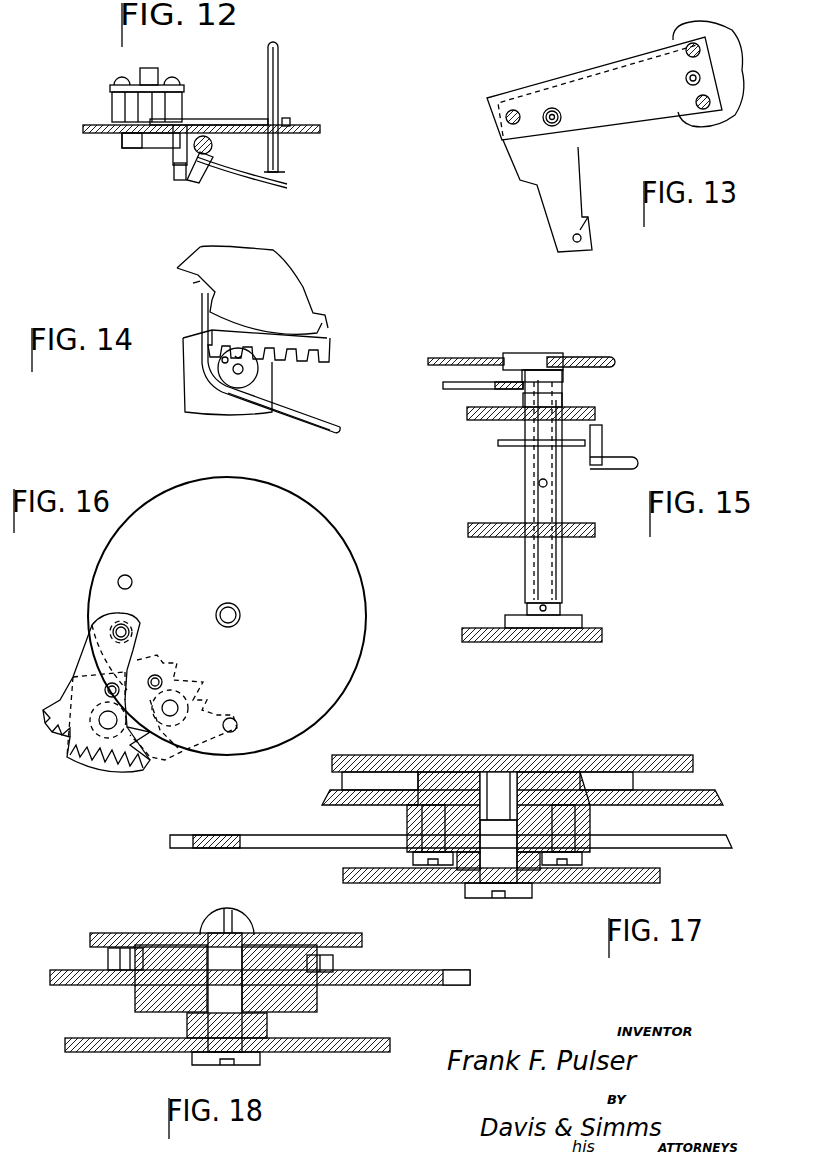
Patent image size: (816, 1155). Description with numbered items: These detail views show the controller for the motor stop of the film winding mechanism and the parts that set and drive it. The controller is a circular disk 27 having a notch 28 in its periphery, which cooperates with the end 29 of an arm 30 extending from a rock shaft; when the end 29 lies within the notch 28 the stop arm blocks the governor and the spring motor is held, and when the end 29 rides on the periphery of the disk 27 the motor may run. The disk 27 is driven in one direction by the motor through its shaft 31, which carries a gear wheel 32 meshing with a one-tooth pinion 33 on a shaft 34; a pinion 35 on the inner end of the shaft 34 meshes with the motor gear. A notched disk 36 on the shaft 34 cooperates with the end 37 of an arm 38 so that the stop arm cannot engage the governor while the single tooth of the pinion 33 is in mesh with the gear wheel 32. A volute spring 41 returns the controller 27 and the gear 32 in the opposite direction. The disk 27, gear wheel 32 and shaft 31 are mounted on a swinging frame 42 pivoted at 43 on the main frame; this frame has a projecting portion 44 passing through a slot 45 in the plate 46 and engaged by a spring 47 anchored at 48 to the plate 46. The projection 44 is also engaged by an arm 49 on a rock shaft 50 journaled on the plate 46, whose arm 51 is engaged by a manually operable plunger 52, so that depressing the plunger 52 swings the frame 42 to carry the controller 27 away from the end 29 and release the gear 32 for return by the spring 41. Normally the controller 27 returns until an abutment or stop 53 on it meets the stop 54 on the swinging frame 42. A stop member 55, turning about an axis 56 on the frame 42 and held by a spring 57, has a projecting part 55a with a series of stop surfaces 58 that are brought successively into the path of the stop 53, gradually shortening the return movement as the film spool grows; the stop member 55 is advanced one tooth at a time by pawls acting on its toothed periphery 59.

In FIG. 14, the circular disk 27 is at (300, 302).
In FIG. 15, the circular disk 27 is at (470, 358).
In FIG. 16, the circular disk 27 is at (350, 652).
In FIG. 17, the circular disk 27 is at (712, 796).
In FIG. 14, the notch 28 is at (193, 283).
In FIG. 16, the notch 28 is at (160, 667).
In FIG. 14, the end of arm 29 is at (202, 306).
In FIG. 15, the end of arm 29 is at (537, 354).
In FIG. 14, the arm 30 is at (294, 422).
In FIG. 15, the arm 30 is at (617, 362).
In FIG. 16, the shaft 31 is at (238, 612).
In FIG. 17, the shaft 31 is at (495, 772).
In FIG. 14, the gear wheel 32 is at (325, 338).
In FIG. 15, the gear wheel 32 is at (448, 388).
In FIG. 17, the gear wheel 32 is at (700, 845).
In FIG. 14, the one-tooth pinion 33 is at (258, 372).
In FIG. 15, the one-tooth pinion 33 is at (565, 400).
In FIG. 14, the shaft 34 is at (232, 370).
In FIG. 15, the shaft 34 is at (555, 522).
In FIG. 15, the pinion 35 is at (576, 617).
In FIG. 15, the notched disk 36 is at (512, 447).
In FIG. 15, the end of arm 37 is at (603, 456).
In FIG. 15, the arm 38 is at (640, 465).
In FIG. 17, the volute spring 41 is at (637, 783).
In FIG. 12, the swinging frame 42 is at (112, 90).
In FIG. 13, the swinging frame 42 is at (565, 80).
In FIG. 17, the swinging frame 42 is at (597, 885).
In FIG. 18, the swinging frame 42 is at (165, 1052).
In FIG. 12, the pivot 43 is at (152, 63).
In FIG. 13, the pivot 43 is at (688, 72).
In FIG. 12, the projecting portion 44 is at (177, 178).
In FIG. 12, the slot 45 is at (188, 128).
In FIG. 12, the plate 46 is at (312, 127).
In FIG. 13, the plate 46 is at (560, 240).
In FIG. 15, the plate 46 is at (487, 421).
In FIG. 12, the spring 47 is at (158, 148).
In FIG. 12, the anchor 48 is at (128, 150).
In FIG. 12, the arm 49 is at (200, 182).
In FIG. 12, the rock shaft 50 is at (213, 146).
In FIG. 12, the arm 51 is at (255, 180).
In FIG. 12, the manually operable plunger 52 is at (280, 97).
In FIG. 16, the abutment or stop 53 is at (118, 582).
In FIG. 16, the stop 54 is at (110, 632).
In FIG. 18, the stop 54 is at (262, 1060).
In FIG. 16, the stop member 55 is at (72, 678).
In FIG. 18, the stop member 55 is at (410, 986).
In FIG. 16, the projecting part 55a is at (97, 764).
In FIG. 13, the axis 56 is at (546, 110).
In FIG. 16, the axis 56 is at (129, 627).
In FIG. 18, the axis 56 is at (250, 962).
In FIG. 18, the spring 57 is at (337, 963).
In FIG. 16, the stop surfaces 58 is at (143, 771).
In FIG. 16, the toothed periphery 59 is at (60, 732).
In FIG. 18, the toothed periphery 59 is at (463, 987).